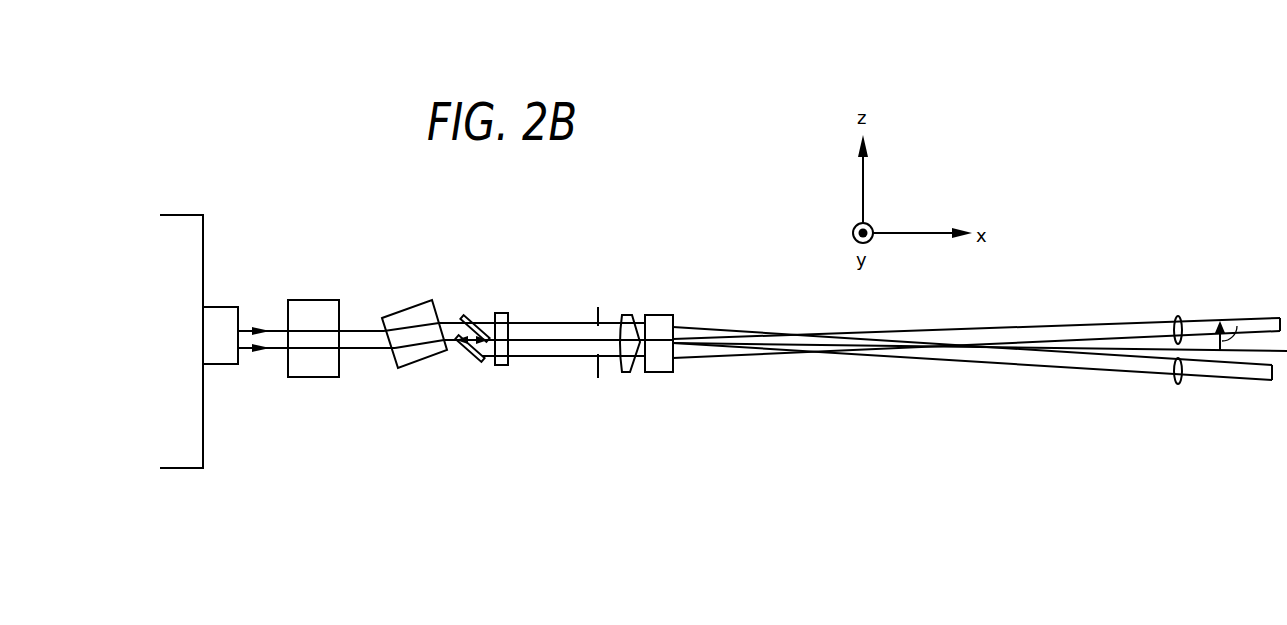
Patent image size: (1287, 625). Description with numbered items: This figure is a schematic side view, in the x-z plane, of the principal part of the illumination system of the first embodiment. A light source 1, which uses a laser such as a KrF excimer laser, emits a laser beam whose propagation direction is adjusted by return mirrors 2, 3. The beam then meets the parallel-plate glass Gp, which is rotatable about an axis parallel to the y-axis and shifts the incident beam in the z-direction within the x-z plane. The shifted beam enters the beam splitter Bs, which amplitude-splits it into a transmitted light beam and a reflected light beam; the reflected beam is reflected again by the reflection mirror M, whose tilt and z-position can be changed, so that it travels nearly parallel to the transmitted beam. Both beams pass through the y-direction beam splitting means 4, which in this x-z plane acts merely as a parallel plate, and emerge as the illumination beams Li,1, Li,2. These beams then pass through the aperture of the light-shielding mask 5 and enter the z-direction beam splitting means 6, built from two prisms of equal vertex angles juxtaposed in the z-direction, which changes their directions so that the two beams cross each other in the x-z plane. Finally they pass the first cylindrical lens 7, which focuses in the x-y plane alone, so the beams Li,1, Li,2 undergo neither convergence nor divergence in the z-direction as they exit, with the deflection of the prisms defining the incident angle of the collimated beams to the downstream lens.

The light source 1 is at (204, 233).
The return mirror 2 is at (309, 300).
The return mirror 3 is at (314, 377).
The y-direction beam splitting means 4 is at (505, 313).
The light-shielding mask 5 is at (598, 307).
The z-direction beam splitting means 6 is at (627, 315).
The first cylindrical lens 7 is at (663, 315).
The parallel-plate glass Gp is at (403, 316).
The beam splitter Bs is at (463, 315).
The reflection mirror M is at (469, 348).
The illumination beam Li,1 is at (1177, 316).
The illumination beam Li,2 is at (1177, 384).